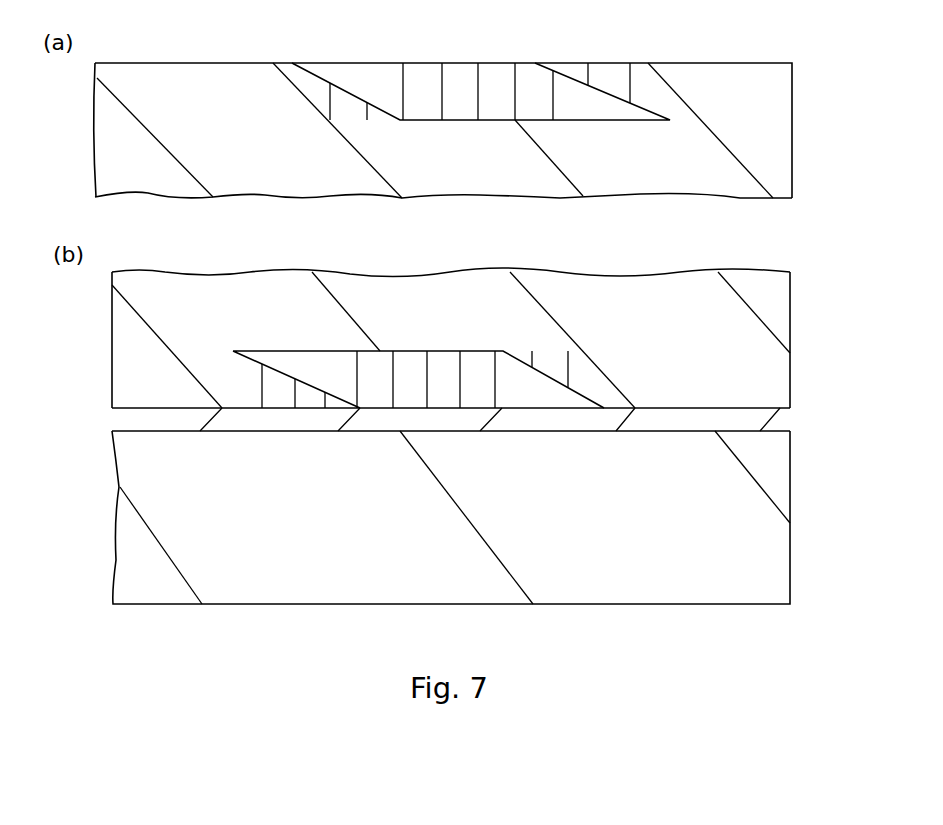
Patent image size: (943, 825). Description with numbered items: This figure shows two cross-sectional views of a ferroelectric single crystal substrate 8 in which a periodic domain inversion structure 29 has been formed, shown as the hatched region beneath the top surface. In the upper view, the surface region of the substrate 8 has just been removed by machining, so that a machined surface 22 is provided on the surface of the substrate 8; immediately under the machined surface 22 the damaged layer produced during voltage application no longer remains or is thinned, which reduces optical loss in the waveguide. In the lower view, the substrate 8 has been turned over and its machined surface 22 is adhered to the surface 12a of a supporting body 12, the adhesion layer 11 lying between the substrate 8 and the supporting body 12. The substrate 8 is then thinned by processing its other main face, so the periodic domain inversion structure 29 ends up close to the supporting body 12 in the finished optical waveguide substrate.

The ferroelectric single crystal substrate 8 is at (785, 152).
The periodic domain inversion structure 29 is at (526, 81).
The machined surface 22 is at (655, 62).
The adhesion layer 11 is at (783, 416).
The surface of the supporting body 12a is at (577, 425).
The supporting body 12 is at (777, 475).